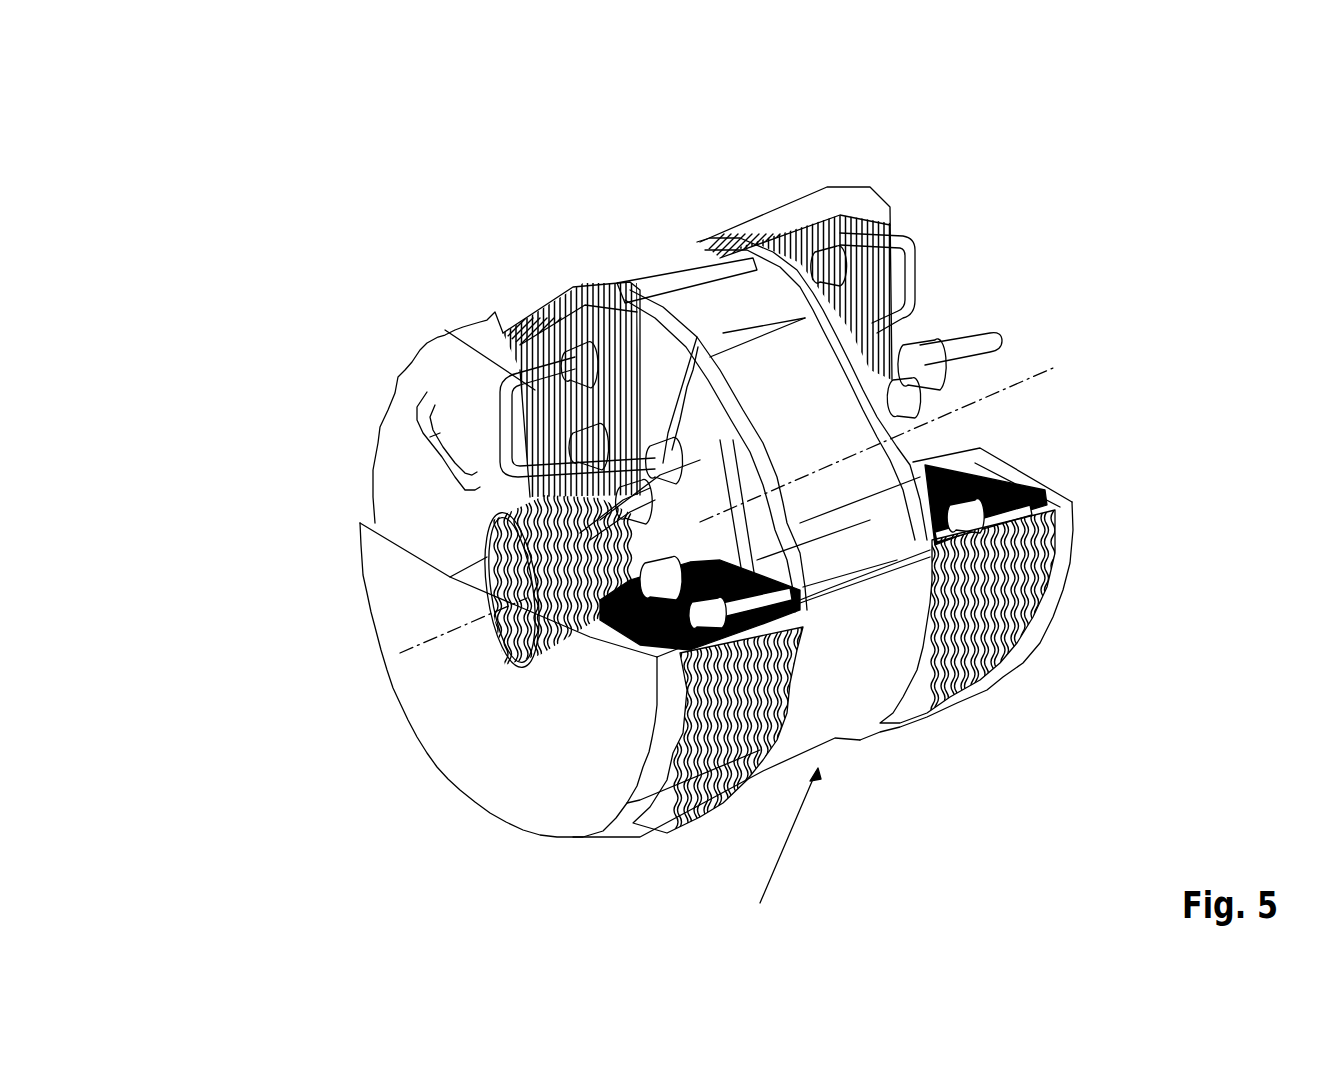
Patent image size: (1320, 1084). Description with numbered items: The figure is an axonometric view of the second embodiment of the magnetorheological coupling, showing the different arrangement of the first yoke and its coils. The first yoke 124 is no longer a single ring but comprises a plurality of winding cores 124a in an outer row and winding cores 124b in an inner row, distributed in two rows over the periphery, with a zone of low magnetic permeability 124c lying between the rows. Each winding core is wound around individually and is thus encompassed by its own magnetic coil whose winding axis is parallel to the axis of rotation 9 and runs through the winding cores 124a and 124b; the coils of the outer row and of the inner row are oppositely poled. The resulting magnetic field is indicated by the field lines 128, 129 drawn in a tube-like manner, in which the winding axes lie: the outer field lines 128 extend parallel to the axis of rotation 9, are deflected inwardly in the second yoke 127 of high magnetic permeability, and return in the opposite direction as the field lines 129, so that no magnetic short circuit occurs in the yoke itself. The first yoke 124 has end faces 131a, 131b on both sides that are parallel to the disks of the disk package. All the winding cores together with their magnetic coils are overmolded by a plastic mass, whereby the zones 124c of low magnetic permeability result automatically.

The axis of rotation 9 is at (1021, 376).
The first yoke 124 is at (778, 852).
The winding cores (outer row) 124a is at (837, 353).
The winding cores (inner row) 124b is at (715, 507).
The zone of low magnetic permeability 124c is at (714, 465).
The second yoke 127 is at (388, 570).
The field lines (outer) 128 is at (528, 378).
The field lines (inner) 129 is at (550, 465).
The end face 131a is at (718, 408).
The end face 131b is at (697, 465).